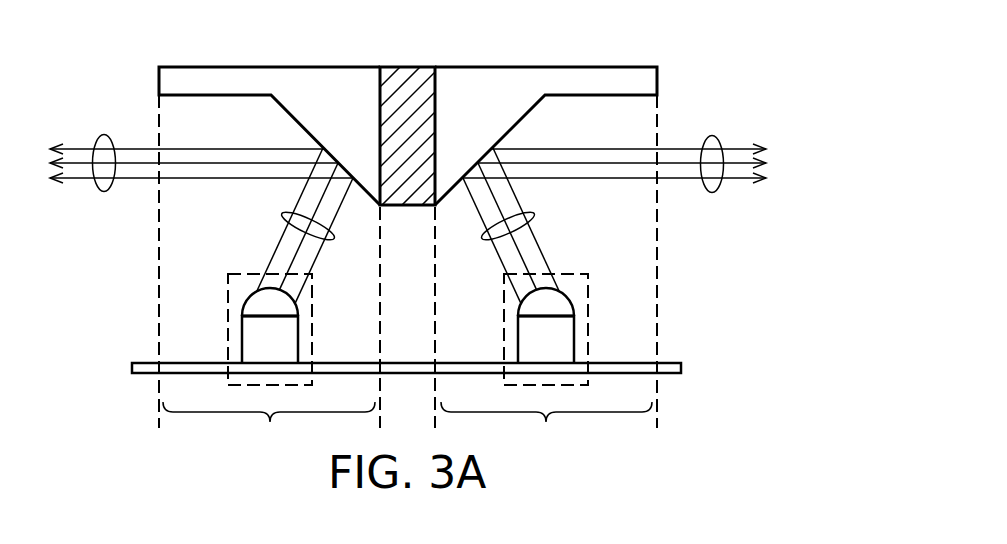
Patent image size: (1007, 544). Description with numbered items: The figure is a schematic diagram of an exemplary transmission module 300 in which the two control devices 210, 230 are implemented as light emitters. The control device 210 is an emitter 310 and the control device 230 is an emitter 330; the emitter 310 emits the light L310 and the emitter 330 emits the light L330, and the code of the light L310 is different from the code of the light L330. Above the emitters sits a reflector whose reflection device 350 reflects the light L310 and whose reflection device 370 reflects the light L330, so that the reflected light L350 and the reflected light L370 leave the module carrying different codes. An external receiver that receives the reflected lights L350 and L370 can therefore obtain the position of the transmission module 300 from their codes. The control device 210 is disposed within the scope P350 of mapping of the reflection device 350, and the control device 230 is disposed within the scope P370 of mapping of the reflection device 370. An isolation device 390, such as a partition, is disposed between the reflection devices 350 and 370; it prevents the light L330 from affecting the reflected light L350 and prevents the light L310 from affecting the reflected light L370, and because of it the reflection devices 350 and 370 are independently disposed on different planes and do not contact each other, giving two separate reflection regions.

The transmission module 300 is at (464, 131).
The reflection device 370 is at (323, 88).
The isolation device 390 is at (402, 86).
The reflection device 350 is at (488, 88).
The control device 230 is at (247, 273).
The control device 210 is at (567, 274).
The emitter 330 is at (242, 337).
The emitter 310 is at (574, 336).
The light L330 is at (284, 214).
The light L310 is at (533, 213).
The reflected light L370 is at (104, 192).
The reflected light L350 is at (712, 192).
The scope of mapping P370 is at (269, 428).
The scope of mapping P350 is at (546, 428).